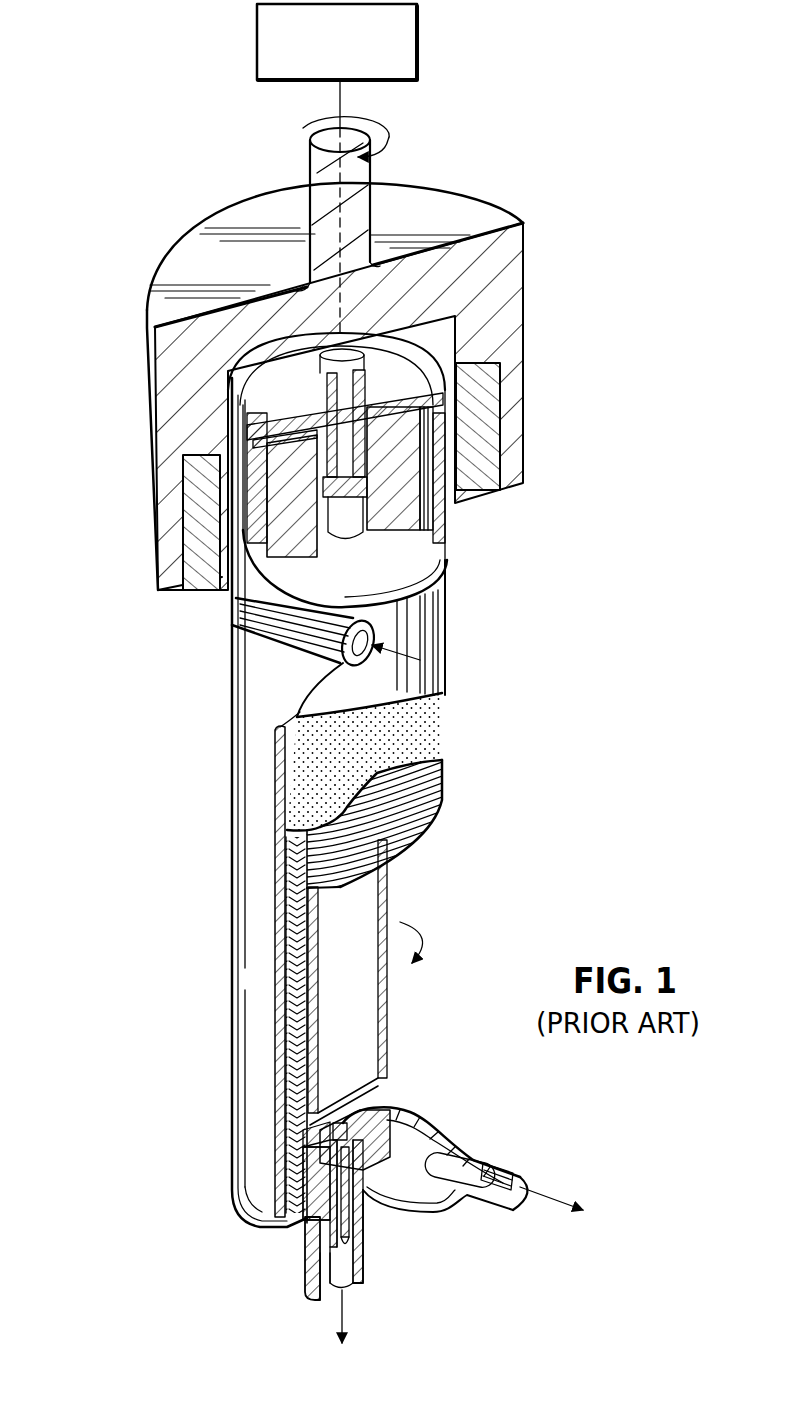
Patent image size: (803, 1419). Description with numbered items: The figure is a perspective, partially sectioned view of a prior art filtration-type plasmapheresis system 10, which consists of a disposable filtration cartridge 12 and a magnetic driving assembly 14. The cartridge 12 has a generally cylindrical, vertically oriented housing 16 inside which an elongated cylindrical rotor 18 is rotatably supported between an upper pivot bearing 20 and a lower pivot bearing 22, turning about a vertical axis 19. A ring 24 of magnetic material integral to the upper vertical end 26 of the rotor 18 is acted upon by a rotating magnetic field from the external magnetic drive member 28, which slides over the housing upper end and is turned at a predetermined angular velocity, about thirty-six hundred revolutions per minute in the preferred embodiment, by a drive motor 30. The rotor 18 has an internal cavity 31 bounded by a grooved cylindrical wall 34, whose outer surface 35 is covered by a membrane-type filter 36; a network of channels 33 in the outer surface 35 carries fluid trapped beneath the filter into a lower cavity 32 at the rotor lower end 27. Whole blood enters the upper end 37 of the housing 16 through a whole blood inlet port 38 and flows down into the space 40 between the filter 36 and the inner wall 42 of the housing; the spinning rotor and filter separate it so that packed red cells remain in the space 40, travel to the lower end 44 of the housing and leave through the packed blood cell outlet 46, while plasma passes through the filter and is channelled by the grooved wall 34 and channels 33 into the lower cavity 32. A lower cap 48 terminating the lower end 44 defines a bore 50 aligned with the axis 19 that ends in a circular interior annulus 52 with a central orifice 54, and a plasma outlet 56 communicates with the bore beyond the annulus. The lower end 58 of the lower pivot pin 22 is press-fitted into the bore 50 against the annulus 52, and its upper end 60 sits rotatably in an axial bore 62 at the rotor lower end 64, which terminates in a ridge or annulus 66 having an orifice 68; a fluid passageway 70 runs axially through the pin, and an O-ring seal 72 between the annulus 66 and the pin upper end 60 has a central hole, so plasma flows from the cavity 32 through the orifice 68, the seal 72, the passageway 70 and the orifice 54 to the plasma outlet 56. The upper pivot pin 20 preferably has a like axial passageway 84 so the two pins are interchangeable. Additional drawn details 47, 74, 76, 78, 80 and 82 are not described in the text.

The plasmapheresis system 10 is at (58, 350).
The filtration cartridge 12 is at (207, 873).
The magnetic driving assembly 14 is at (580, 187).
The housing 16 is at (245, 688).
The rotor 18 is at (433, 652).
The axis of rotation 19 is at (340, 233).
The upper pivot bearing 20 is at (363, 385).
The lower pivot bearing 22 is at (330, 1235).
The ring of magnetic material 24 is at (277, 577).
The upper vertical end of rotor 26 is at (258, 492).
The rotor lower end 27 is at (283, 1102).
The magnetic drive member 28 is at (517, 265).
The drive motor 30 is at (418, 58).
The internal cavity 31 is at (350, 908).
The lower cavity 32 is at (375, 1093).
The network of channels 33 is at (303, 983).
The grooved cylindrical wall 34 is at (430, 793).
The outer surface of grooved wall 35 is at (400, 803).
The membrane-type filter 36 is at (417, 743).
The upper end of housing 37 is at (238, 608).
The whole blood inlet port 38 is at (384, 656).
The space between filter and inner wall 40 is at (287, 770).
The inner wall of housing 42 is at (287, 723).
The lower end of housing 44 is at (212, 1215).
The packed blood cell outlet 46 is at (497, 1167).
The nozzle bore 47 is at (397, 1140).
The lower cap 48 is at (290, 1230).
The bore 50 is at (367, 1230).
The interior wall annulus 52 is at (323, 1260).
The circular orifice 54 is at (353, 1260).
The plasma outlet 56 is at (343, 1289).
The lower end of lower pivot pin 58 is at (367, 1220).
The upper end of lower pivot pin 60 is at (317, 1175).
The bore at rotor lower end 62 is at (427, 1130).
The rotor lower end 64 is at (318, 1182).
The ridge or annulus 66 is at (377, 1120).
The orifice 68 is at (347, 1125).
The fluid passageway 70 is at (303, 1158).
The O-ring seal 72 is at (300, 1135).
The rotor shaft end 74 is at (340, 372).
The top plate 76 is at (327, 395).
The cap inner wall 78 is at (400, 360).
The lower plate 80 is at (360, 467).
The rotor magnet 82 is at (400, 482).
The passageway through upper pivot pin 84 is at (335, 330).